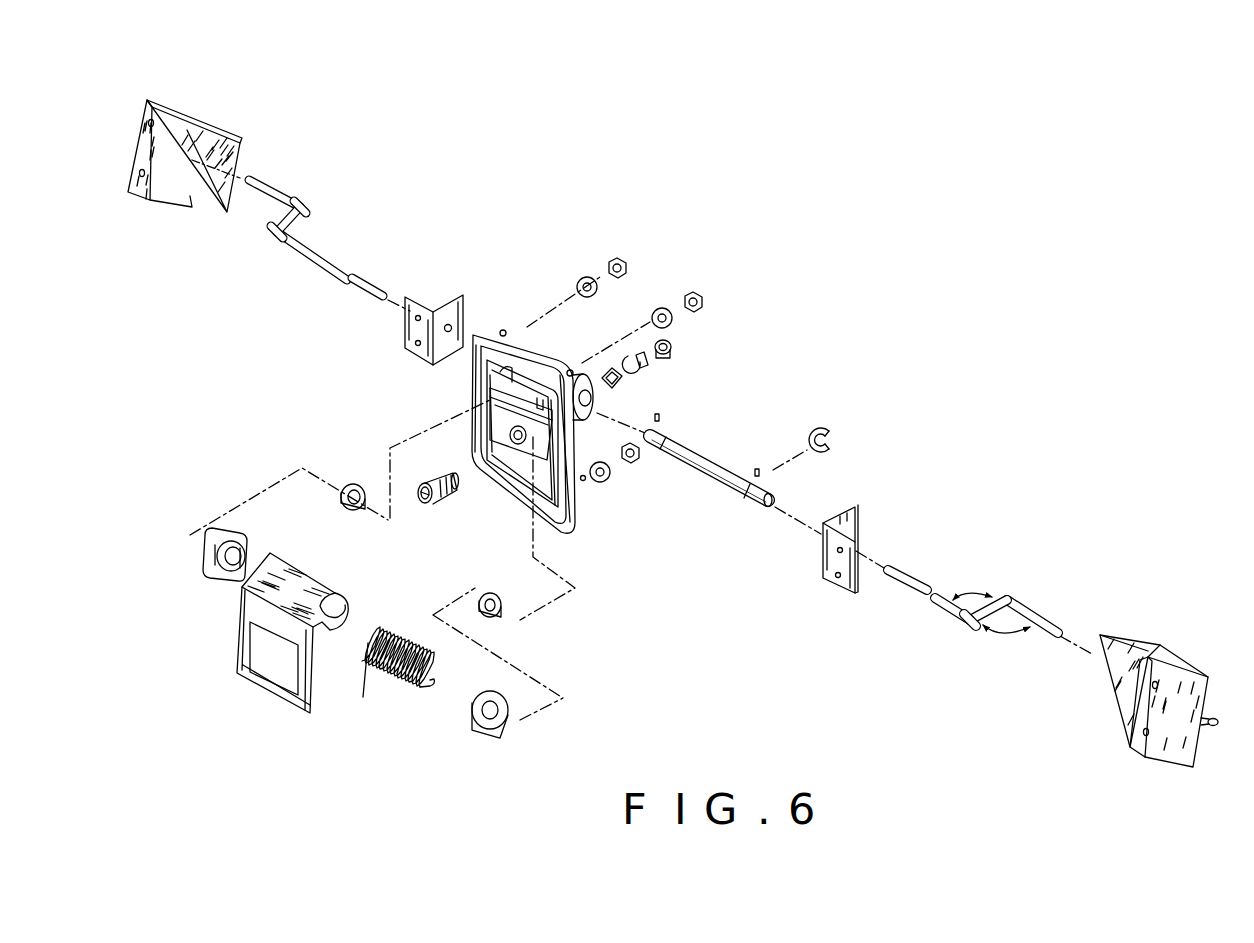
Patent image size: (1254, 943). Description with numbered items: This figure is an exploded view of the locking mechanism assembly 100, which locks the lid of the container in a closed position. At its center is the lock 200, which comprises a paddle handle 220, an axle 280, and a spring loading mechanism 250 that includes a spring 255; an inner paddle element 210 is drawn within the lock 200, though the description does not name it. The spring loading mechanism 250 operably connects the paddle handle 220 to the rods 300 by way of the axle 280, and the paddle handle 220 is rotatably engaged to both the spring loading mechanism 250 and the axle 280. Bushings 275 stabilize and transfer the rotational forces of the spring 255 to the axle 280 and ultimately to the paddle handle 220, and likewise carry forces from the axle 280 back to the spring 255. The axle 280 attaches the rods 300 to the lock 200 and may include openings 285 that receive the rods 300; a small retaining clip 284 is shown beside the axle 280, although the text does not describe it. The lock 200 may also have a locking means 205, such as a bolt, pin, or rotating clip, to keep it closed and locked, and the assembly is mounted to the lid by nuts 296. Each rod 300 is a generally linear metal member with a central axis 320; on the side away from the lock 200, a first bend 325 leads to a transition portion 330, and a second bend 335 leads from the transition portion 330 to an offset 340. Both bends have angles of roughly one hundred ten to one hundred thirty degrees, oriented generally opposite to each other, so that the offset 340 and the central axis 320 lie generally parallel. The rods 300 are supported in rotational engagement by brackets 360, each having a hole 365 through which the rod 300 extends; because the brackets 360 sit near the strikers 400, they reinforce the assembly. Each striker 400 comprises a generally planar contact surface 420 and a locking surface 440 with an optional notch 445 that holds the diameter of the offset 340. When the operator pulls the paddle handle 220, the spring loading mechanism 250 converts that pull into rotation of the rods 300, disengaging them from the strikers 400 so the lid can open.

The locking mechanism assembly 100 is at (795, 205).
The lock 200 is at (598, 548).
The locking means 205 is at (444, 503).
The paddle handle 210 is at (490, 330).
The paddle handle 220 is at (242, 627).
The spring loading mechanism 250 is at (363, 596).
The spring 255 is at (402, 687).
The bushings 275 is at (352, 484).
The axle 280 is at (707, 460).
The retaining clip 284 is at (821, 426).
The openings 285 is at (765, 517).
The nuts 296 is at (614, 262).
The rods 300 is at (658, 431).
The central axis 320 is at (307, 263).
The first bend 325 is at (280, 228).
The transition portion 330 is at (263, 223).
The second bend 335 is at (306, 207).
The offset 340 is at (278, 185).
The brackets 360 is at (413, 298).
The hole 365 is at (448, 327).
The strikers 400 is at (678, 412).
The contact surface 420 is at (193, 182).
The locking surface 440 is at (246, 170).
The notch 445 is at (232, 160).